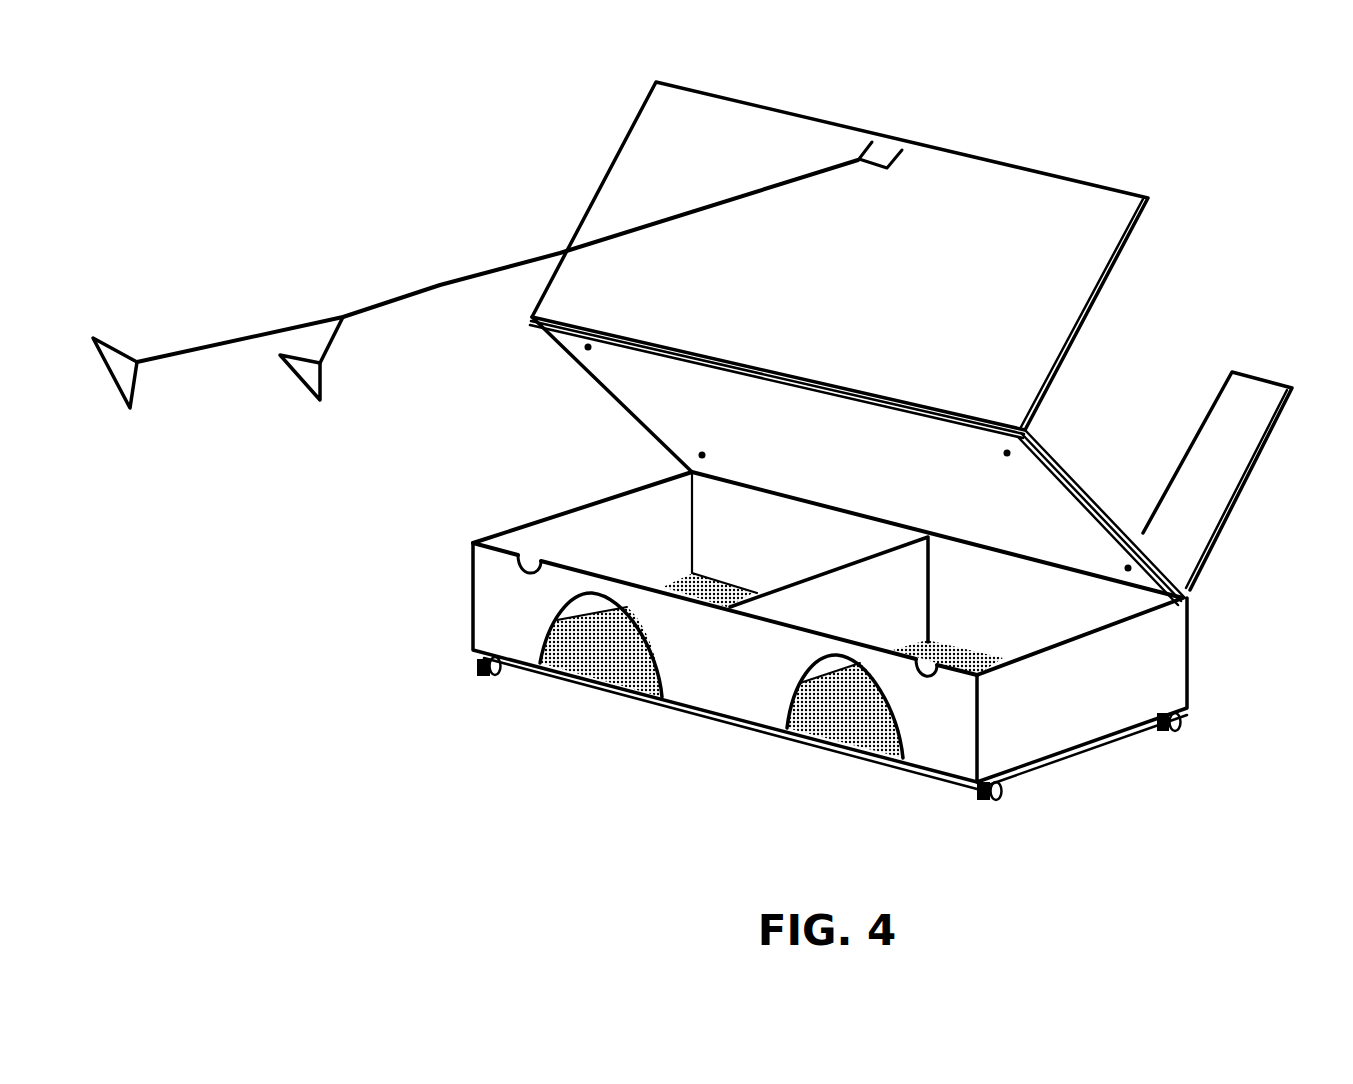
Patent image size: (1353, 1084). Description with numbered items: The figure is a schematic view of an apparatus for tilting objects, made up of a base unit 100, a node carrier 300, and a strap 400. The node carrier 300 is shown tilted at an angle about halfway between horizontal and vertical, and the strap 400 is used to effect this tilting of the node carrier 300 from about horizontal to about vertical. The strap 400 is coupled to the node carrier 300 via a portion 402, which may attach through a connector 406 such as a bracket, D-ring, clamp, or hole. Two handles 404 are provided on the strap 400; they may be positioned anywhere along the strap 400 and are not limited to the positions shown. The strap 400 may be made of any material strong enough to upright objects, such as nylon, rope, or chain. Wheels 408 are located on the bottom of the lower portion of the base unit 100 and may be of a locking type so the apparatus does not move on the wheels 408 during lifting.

The base unit 100 is at (804, 682).
The node carrier 300 is at (1168, 278).
The strap 400 is at (530, 273).
The portion 402 is at (440, 285).
The handles 404 is at (118, 348).
The connector 406 is at (893, 135).
The wheels 408 is at (478, 672).